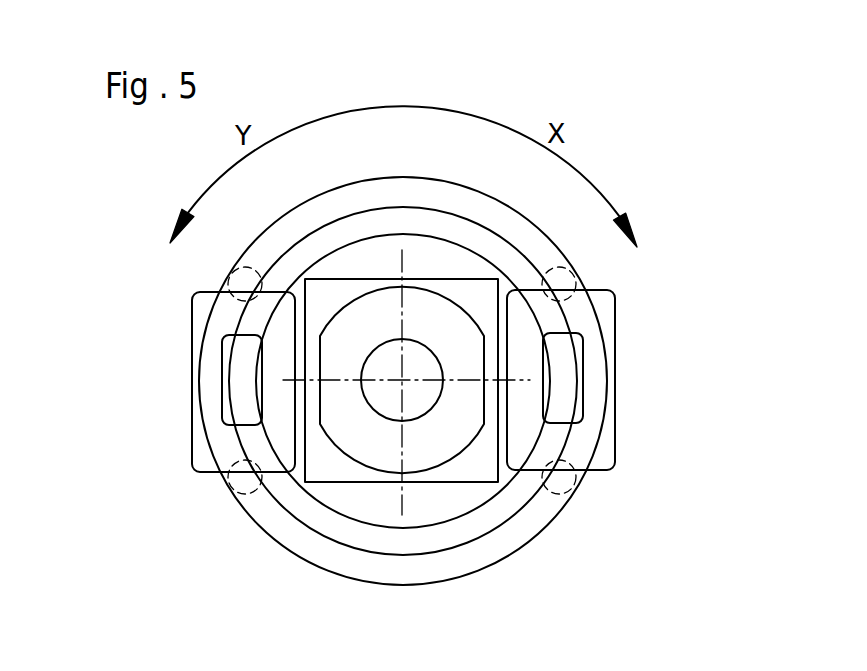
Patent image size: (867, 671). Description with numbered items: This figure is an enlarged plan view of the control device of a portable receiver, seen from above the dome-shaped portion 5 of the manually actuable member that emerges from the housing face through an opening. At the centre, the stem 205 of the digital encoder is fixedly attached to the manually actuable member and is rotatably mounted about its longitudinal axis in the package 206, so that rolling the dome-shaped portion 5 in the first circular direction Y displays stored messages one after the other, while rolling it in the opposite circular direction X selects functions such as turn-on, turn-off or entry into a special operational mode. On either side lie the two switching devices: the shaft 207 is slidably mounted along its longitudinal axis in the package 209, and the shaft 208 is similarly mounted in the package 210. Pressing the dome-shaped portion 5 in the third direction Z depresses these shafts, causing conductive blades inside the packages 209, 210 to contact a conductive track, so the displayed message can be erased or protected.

The dome-shaped portion 5 is at (497, 552).
The stem 205 is at (387, 397).
The package 206 is at (467, 467).
The shaft 207 is at (240, 393).
The shaft 208 is at (563, 392).
The package 209 is at (203, 308).
The package 210 is at (605, 305).